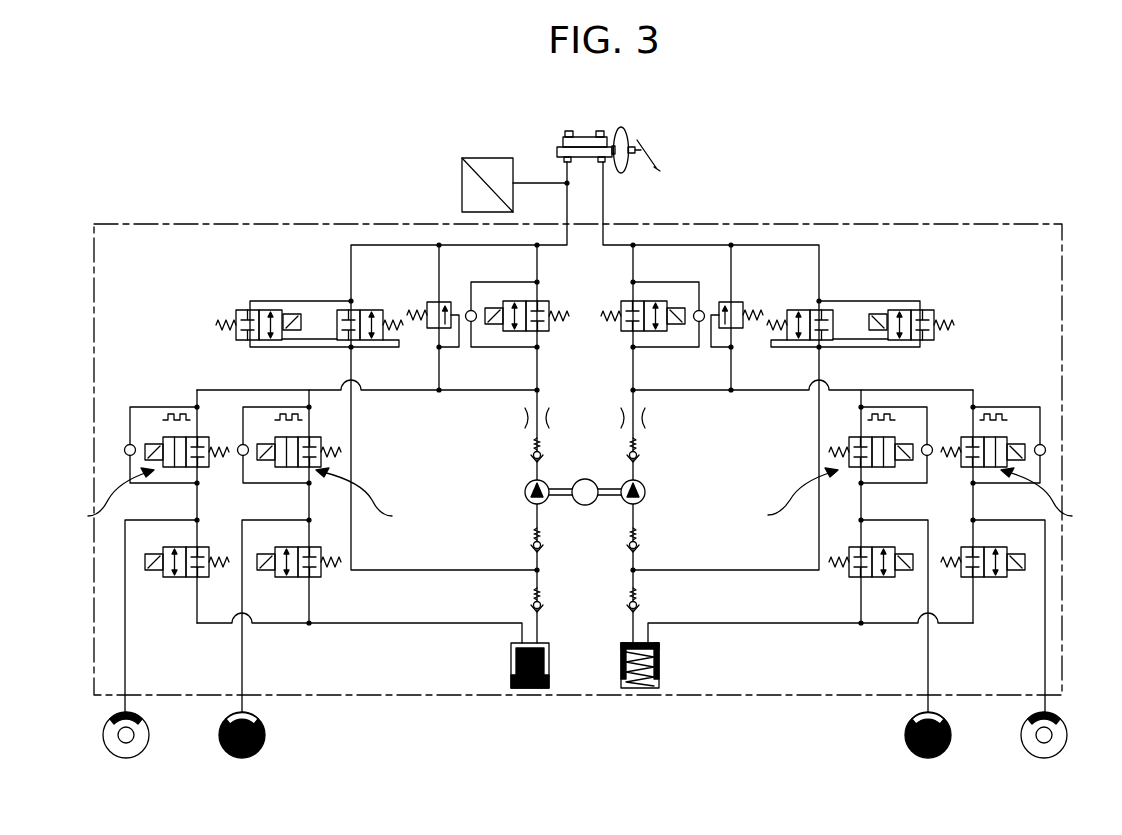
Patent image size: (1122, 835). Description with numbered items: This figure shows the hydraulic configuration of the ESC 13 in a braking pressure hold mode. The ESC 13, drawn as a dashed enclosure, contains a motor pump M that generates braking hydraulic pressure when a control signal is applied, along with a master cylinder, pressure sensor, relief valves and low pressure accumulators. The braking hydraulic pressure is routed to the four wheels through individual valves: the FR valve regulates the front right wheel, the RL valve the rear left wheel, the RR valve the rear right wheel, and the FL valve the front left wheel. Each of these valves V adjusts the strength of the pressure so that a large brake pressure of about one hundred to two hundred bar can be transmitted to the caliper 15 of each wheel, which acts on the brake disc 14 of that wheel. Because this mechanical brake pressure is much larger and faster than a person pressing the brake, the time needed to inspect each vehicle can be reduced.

The ESC 13 is at (170, 225).
The brake disc 14 is at (143, 742).
The caliper 15 is at (141, 718).